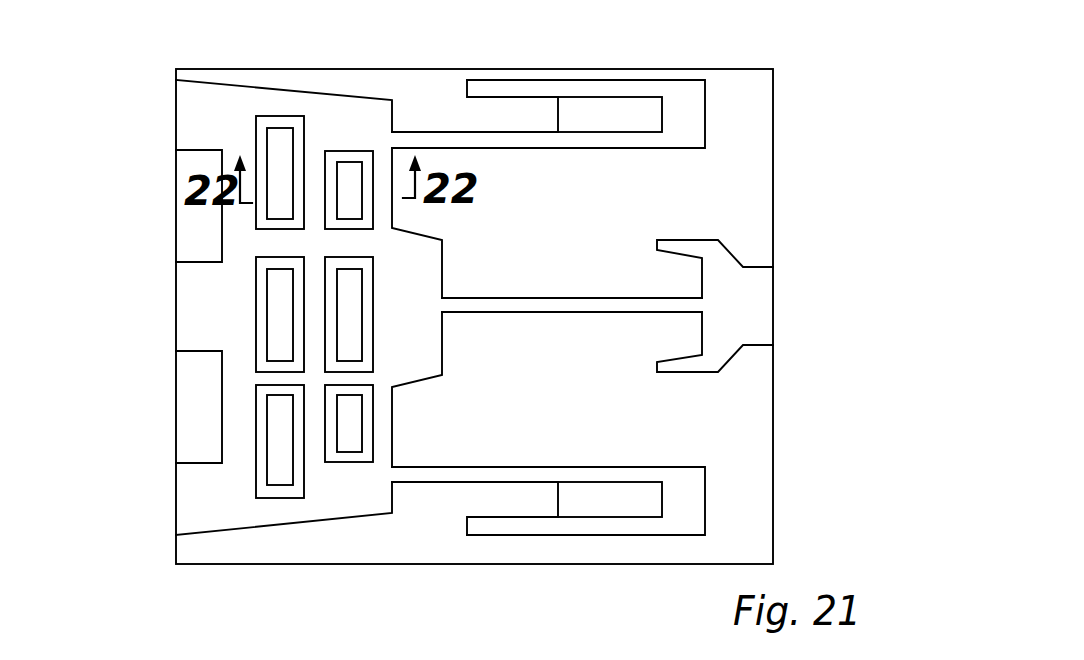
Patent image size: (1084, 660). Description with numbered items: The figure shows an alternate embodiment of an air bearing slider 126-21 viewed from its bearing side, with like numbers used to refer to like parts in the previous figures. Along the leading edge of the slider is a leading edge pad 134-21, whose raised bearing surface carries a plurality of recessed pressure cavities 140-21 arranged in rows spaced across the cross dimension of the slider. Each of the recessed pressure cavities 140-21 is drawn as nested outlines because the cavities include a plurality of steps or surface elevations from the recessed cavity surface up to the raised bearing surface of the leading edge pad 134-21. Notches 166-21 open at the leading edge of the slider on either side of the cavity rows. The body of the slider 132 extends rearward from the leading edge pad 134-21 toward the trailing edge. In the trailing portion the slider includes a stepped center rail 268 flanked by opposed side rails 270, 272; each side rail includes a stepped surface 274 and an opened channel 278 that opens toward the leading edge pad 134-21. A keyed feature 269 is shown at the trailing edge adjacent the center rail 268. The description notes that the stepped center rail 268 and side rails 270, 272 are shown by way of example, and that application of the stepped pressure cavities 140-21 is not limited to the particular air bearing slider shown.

The air bearing slider 126-21 is at (855, 82).
The substrate 132 is at (558, 409).
The leading edge pad 134-21 is at (340, 110).
The recessed pressure cavities 140-21 is at (347, 205).
The edge notches 166-21 is at (200, 229).
The stepped center rail 268 is at (590, 305).
The keyed opening 269 is at (733, 258).
The side rail 270 is at (522, 86).
The side rail 272 is at (612, 537).
The stepped surface 274 is at (630, 123).
The opened channel 278 is at (473, 112).